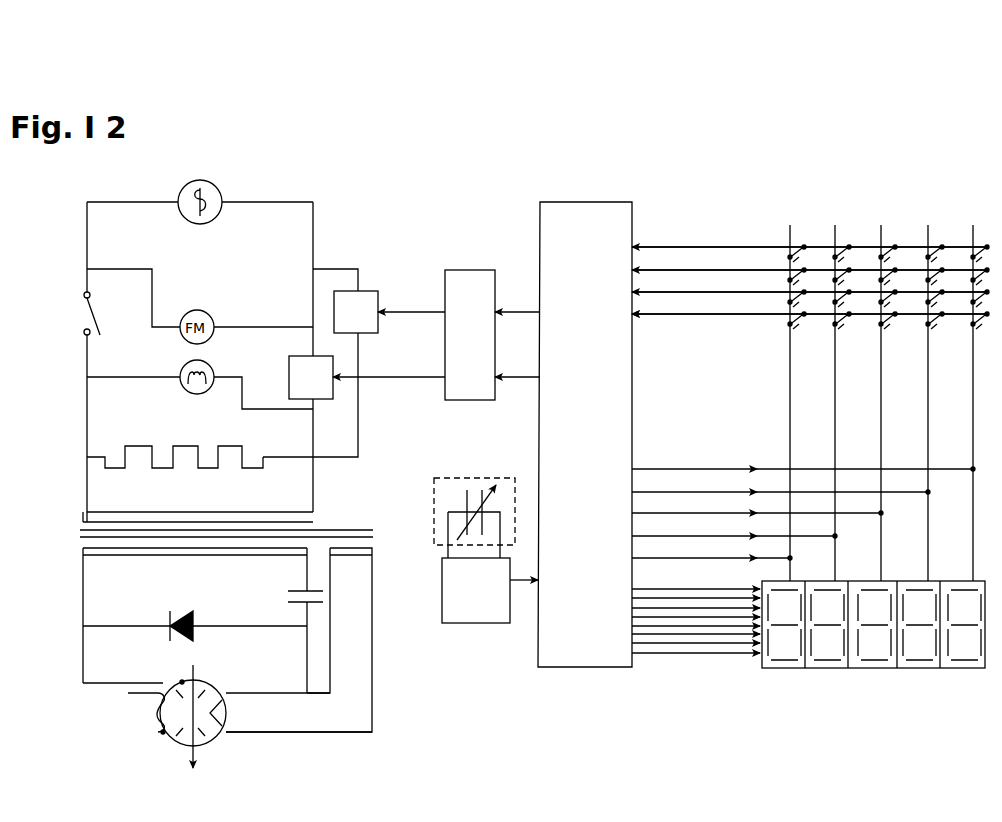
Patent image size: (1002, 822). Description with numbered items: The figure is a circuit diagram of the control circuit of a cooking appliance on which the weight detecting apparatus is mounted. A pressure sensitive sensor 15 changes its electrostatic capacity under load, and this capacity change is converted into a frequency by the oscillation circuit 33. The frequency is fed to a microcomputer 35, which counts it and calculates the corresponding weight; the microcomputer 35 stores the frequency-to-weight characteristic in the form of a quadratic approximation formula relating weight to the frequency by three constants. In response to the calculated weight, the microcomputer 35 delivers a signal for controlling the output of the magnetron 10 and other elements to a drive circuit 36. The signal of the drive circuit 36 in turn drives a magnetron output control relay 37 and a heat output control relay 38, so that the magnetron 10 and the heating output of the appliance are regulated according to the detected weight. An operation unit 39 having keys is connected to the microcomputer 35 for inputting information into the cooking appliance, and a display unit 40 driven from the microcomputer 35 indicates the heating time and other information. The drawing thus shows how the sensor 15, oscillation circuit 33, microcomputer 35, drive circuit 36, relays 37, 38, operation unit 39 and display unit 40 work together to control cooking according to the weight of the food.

The magnetron 10 is at (203, 747).
The pressure sensitive sensor 15 is at (434, 490).
The oscillation circuit 33 is at (462, 624).
The microcomputer 35 is at (608, 198).
The drive circuit 36 is at (481, 268).
The magnetron output control relay 37 is at (289, 364).
The heat output control relay 38 is at (375, 291).
The operation unit 39 is at (865, 232).
The display unit 40 is at (838, 662).